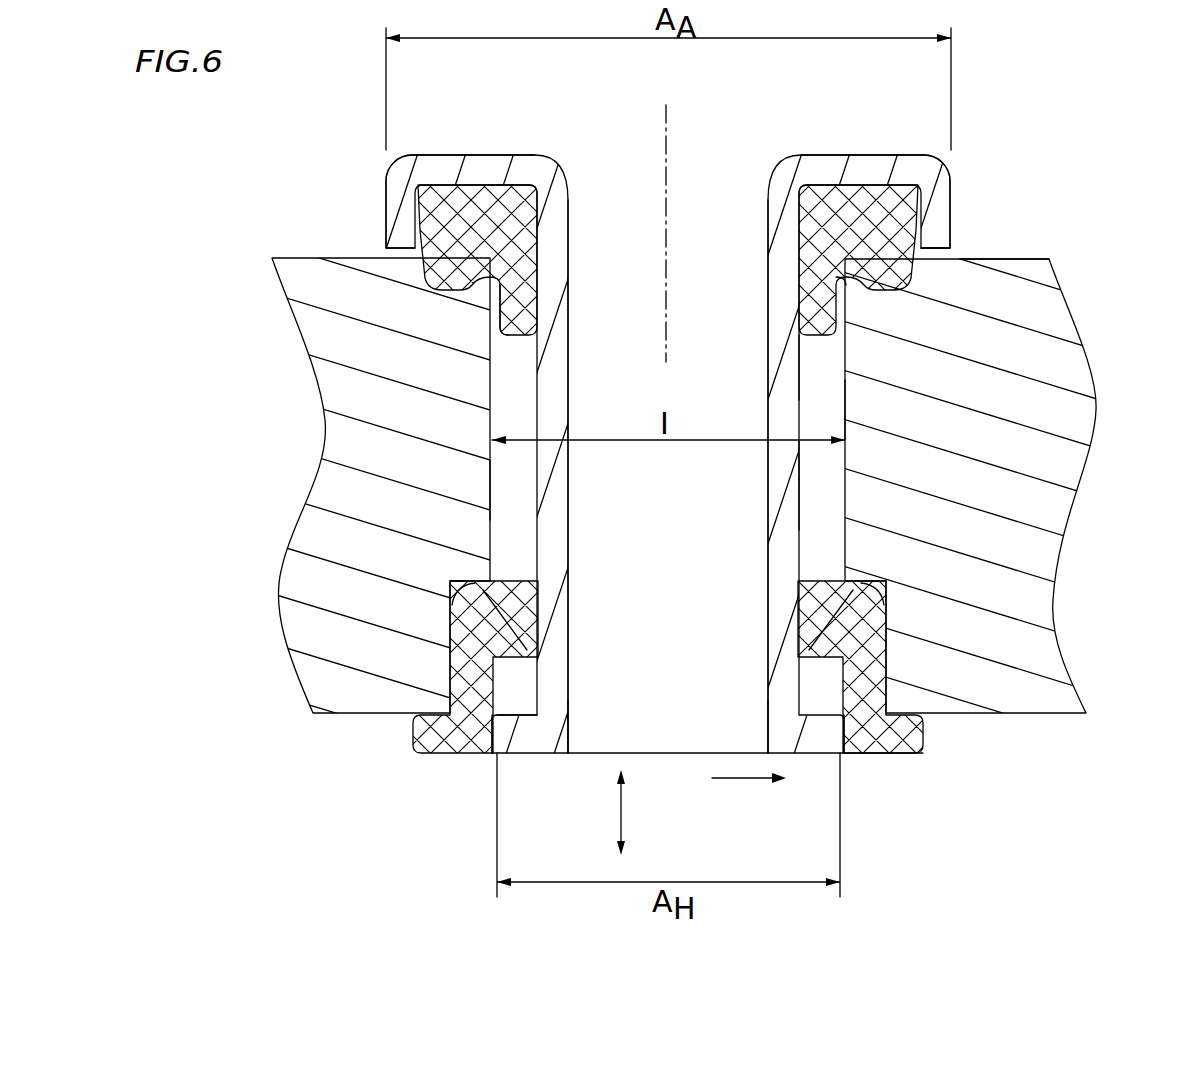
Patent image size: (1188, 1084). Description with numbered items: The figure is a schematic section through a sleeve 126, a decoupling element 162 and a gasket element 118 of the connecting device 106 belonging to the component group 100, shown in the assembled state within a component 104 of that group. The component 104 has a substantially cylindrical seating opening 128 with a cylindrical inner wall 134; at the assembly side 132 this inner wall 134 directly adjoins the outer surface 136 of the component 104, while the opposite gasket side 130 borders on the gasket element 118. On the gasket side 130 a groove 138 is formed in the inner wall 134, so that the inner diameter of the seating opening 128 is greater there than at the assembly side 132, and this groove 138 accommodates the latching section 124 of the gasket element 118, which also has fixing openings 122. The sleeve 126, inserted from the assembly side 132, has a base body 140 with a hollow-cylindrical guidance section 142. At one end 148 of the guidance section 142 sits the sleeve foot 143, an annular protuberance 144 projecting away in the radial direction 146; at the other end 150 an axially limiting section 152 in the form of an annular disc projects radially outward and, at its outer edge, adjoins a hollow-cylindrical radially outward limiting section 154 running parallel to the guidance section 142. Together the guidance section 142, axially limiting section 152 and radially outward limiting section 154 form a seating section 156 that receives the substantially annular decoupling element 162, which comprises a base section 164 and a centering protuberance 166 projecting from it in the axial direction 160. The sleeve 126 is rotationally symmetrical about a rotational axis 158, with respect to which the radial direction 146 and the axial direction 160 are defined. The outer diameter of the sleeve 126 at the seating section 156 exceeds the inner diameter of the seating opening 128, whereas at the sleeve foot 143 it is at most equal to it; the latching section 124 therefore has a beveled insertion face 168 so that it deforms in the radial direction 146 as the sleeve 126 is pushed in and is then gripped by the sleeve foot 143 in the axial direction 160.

The component group 100 is at (986, 114).
The component 104 is at (1068, 412).
The connecting device 106 is at (1023, 159).
The gasket element 118 is at (905, 753).
The fixing opening 122 is at (853, 771).
The latching section 124 is at (497, 628).
The sleeve 126 is at (806, 350).
The seating opening 128 is at (492, 490).
The gasket side 130 is at (798, 776).
The assembly side 132 is at (605, 143).
The inner wall 134 is at (832, 403).
The outer surface 136 is at (350, 252).
The groove 138 is at (448, 603).
The base body 140 is at (803, 461).
The guidance section 142 is at (803, 500).
The sleeve foot 143 is at (523, 740).
The annular protuberance 144 is at (507, 740).
The radial direction 146 is at (730, 778).
The end 148 is at (574, 776).
The other end 150 is at (414, 136).
The axially limiting section 152 is at (836, 168).
The radially outward limiting section 154 is at (935, 233).
The seating section 156 is at (948, 286).
The rotational axis 158 is at (662, 285).
The axial direction 160 is at (623, 822).
The decoupling element 162 is at (896, 170).
The base section 164 is at (476, 205).
The centering protuberance 166 is at (503, 320).
The beveled insertion face 168 is at (826, 624).